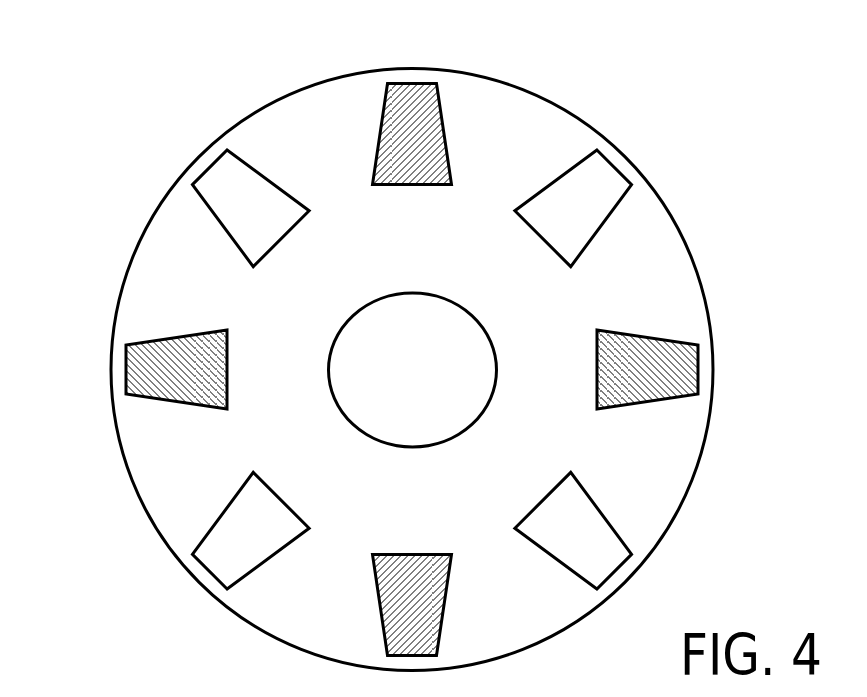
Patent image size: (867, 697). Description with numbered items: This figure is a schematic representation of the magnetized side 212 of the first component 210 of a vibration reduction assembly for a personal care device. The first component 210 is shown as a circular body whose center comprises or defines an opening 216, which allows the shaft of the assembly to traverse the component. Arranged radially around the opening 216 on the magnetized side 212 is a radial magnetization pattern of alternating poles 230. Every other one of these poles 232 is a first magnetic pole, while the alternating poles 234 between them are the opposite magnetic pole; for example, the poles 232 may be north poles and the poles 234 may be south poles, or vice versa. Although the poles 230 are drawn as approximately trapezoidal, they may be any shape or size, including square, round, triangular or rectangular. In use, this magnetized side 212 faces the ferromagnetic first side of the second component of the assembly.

The first component 210 is at (121, 122).
The magnetized side 212 is at (522, 110).
The opening 216 is at (437, 380).
The alternating poles 230 is at (380, 133).
The poles of a first magnetic pole 232 is at (700, 370).
The alternating poles of the opposite magnetic pole 234 is at (603, 175).